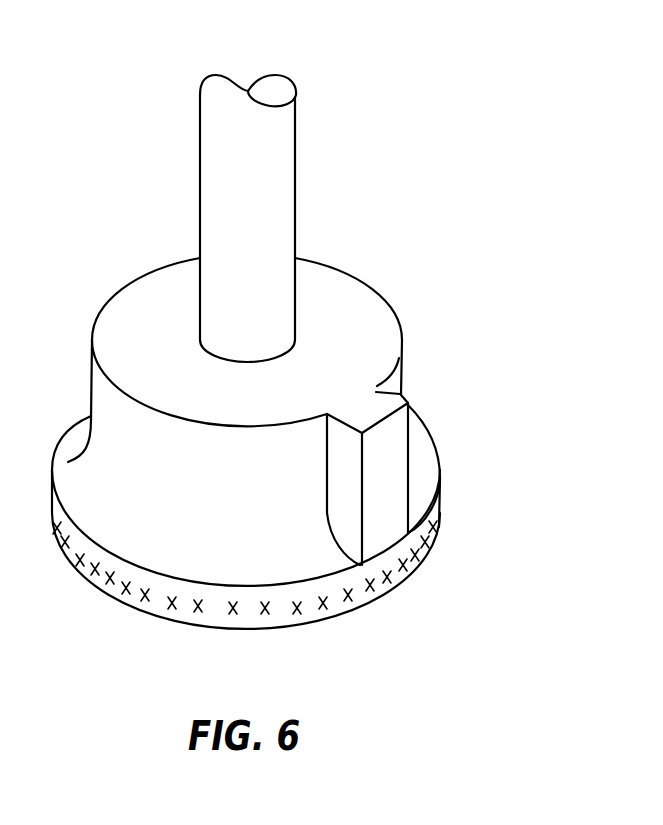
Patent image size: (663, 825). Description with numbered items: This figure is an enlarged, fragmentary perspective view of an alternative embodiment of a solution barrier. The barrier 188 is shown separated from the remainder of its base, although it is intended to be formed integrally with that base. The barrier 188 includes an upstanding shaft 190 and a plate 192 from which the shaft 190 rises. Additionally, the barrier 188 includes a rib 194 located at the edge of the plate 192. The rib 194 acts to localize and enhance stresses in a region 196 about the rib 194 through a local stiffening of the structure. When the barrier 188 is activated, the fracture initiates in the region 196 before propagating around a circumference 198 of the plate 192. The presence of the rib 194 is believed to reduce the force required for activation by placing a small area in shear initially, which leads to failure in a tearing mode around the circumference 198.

The barrier 188 is at (392, 257).
The shaft 190 is at (240, 185).
The plate 192 is at (418, 463).
The rib 194 is at (378, 393).
The region 196 is at (398, 560).
The circumference 198 is at (127, 586).